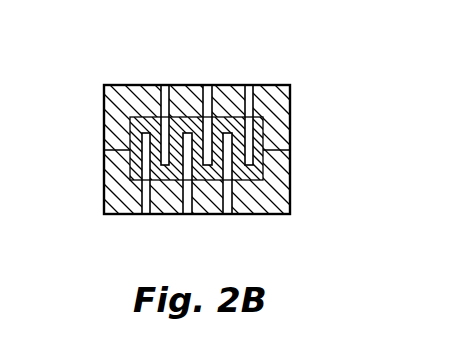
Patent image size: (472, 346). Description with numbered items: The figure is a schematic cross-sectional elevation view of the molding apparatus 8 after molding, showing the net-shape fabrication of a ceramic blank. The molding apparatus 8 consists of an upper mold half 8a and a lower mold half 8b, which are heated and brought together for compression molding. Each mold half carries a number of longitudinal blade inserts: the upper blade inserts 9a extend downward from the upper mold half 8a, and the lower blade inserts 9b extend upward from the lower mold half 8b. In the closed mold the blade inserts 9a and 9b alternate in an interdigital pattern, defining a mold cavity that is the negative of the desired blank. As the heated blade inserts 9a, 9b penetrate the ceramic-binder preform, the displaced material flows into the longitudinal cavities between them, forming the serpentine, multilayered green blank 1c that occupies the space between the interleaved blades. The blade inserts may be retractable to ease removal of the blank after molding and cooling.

The molding apparatus 8 is at (202, 156).
The upper mold half 8a is at (291, 106).
The lower mold half 8b is at (290, 190).
The green blank 1c is at (256, 145).
The blade inserts 9a is at (248, 98).
The blade inserts 9b is at (227, 203).